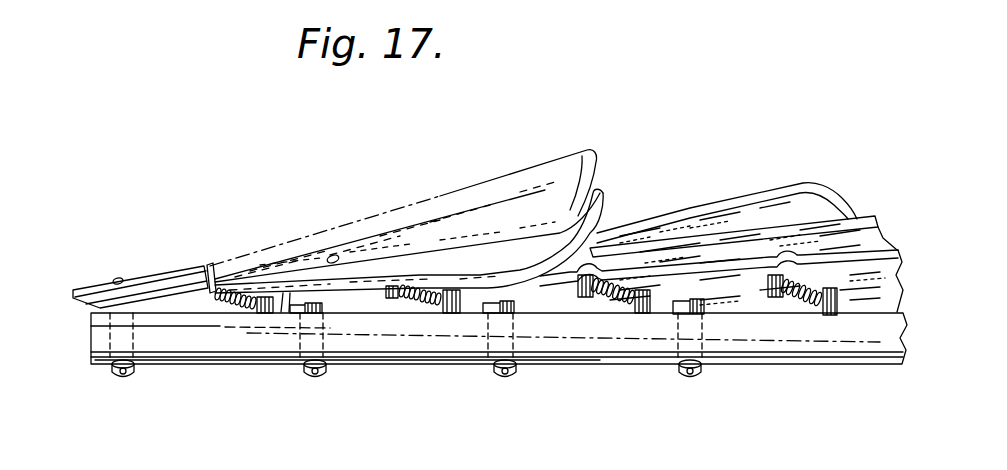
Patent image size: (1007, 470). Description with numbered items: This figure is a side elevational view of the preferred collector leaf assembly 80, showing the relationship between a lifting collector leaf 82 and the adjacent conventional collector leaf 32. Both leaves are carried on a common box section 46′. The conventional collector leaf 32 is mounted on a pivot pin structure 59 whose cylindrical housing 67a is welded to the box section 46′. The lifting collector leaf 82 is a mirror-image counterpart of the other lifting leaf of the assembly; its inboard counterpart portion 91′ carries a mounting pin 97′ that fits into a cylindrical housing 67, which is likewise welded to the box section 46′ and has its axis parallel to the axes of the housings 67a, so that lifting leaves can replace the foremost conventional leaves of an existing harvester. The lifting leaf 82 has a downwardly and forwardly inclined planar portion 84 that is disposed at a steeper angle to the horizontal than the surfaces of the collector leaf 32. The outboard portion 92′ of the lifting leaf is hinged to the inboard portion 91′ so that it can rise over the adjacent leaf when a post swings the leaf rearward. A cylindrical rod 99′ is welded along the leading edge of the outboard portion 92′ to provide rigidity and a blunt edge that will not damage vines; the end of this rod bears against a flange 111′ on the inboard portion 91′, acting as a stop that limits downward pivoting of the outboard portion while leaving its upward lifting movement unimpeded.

The collector leaf 32 is at (885, 252).
The box section 46′ is at (428, 345).
The pivot pin structure 59 is at (316, 378).
The cylindrical housing 67 is at (98, 340).
The cylindrical housing 67a is at (293, 340).
The collector leaf assembly 80 is at (728, 142).
The lifting collector leaf 82 is at (609, 205).
The downwardly and forwardly inclined planar portion 84 is at (597, 222).
The inboard counterpart portion 91′ is at (173, 270).
The outboard portion 92′ is at (523, 195).
The mounting pin 97′ is at (117, 279).
The cylindrical rod 99′ is at (372, 283).
The flange 111′ is at (173, 297).